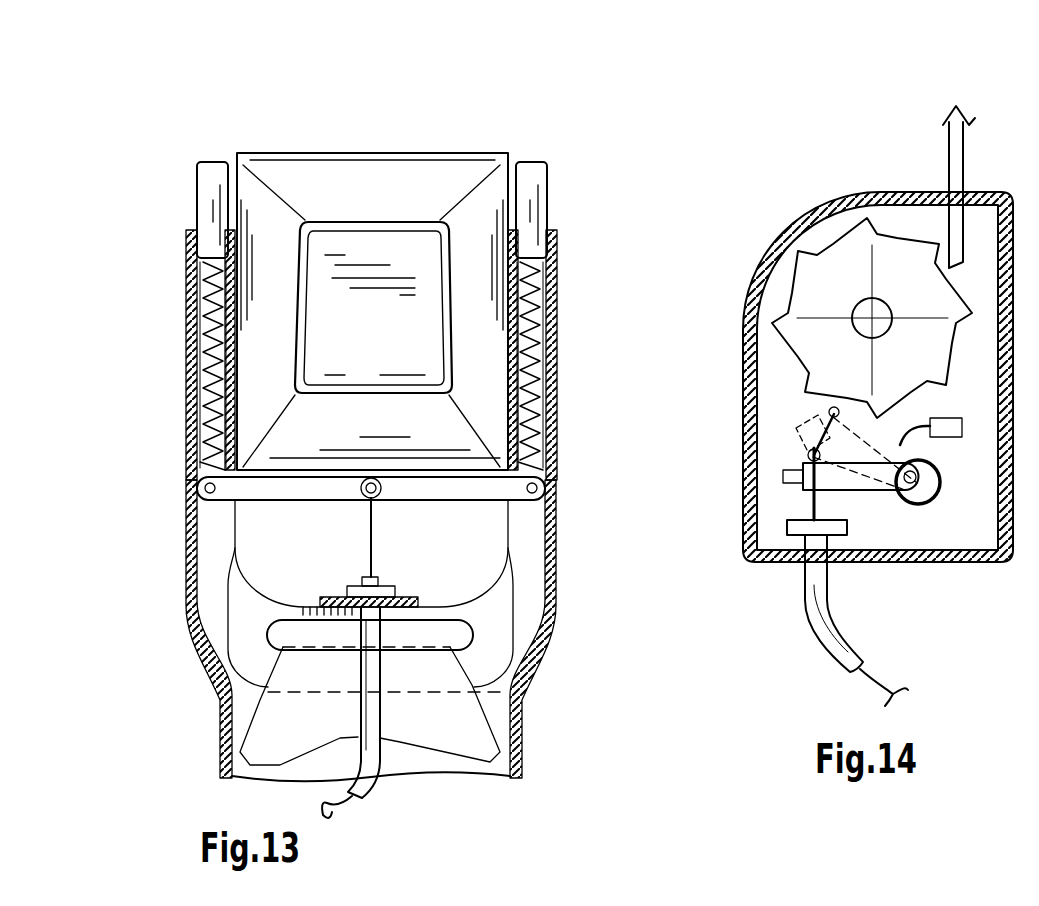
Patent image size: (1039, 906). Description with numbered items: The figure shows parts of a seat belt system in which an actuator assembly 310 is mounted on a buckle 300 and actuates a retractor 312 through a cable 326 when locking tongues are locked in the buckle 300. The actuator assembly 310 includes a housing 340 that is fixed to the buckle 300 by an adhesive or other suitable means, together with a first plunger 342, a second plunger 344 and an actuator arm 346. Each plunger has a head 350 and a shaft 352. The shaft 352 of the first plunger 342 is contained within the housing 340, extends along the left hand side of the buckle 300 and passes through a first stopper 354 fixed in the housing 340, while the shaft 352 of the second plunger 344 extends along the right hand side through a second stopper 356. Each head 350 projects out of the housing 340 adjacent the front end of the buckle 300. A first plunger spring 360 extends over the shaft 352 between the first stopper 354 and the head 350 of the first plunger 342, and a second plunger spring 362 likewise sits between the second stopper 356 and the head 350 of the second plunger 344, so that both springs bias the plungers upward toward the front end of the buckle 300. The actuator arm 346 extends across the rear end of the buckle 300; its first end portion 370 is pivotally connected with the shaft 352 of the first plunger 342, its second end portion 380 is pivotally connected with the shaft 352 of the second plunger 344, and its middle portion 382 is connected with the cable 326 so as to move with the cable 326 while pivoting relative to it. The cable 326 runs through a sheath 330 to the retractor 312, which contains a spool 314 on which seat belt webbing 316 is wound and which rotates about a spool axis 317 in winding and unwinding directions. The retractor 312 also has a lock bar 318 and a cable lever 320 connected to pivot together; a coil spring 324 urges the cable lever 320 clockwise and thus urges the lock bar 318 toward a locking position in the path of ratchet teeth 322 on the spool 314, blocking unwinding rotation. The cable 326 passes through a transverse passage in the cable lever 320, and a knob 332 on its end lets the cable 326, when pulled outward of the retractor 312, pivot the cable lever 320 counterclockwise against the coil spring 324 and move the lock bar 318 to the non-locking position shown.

In FIG. 13, the buckle 300 is at (312, 150).
In FIG. 13, the actuator assembly 310 is at (178, 316).
In FIG. 14, the retractor 312 is at (770, 214).
In FIG. 14, the spool 314 is at (862, 240).
In FIG. 14, the seat belt webbing 316 is at (947, 163).
In FIG. 14, the spool axis 317 is at (868, 316).
In FIG. 14, the lock bar 318 is at (785, 470).
In FIG. 14, the cable lever 320 is at (812, 498).
In FIG. 14, the ratchet teeth 322 is at (772, 340).
In FIG. 14, the coil spring 324 is at (918, 505).
In FIG. 13, the cable 326 is at (373, 542).
In FIG. 14, the cable 326 is at (800, 520).
In FIG. 13, the sheath 330 is at (373, 787).
In FIG. 14, the sheath 330 is at (818, 607).
In FIG. 14, the knob 332 is at (812, 452).
In FIG. 13, the housing 340 is at (185, 538).
In FIG. 13, the first plunger 342 is at (190, 205).
In FIG. 13, the second plunger 344 is at (560, 203).
In FIG. 13, the actuator arm 346 is at (305, 503).
In FIG. 13, the head 350 is at (215, 175).
In FIG. 13, the shaft 352 is at (200, 330).
In FIG. 13, the first stopper 354 is at (200, 458).
In FIG. 13, the second stopper 356 is at (546, 458).
In FIG. 13, the first plunger spring 360 is at (200, 372).
In FIG. 13, the second plunger spring 362 is at (548, 380).
In FIG. 13, the first end portion 370 is at (195, 500).
In FIG. 13, the second end portion 380 is at (546, 527).
In FIG. 13, the middle portion 382 is at (383, 492).